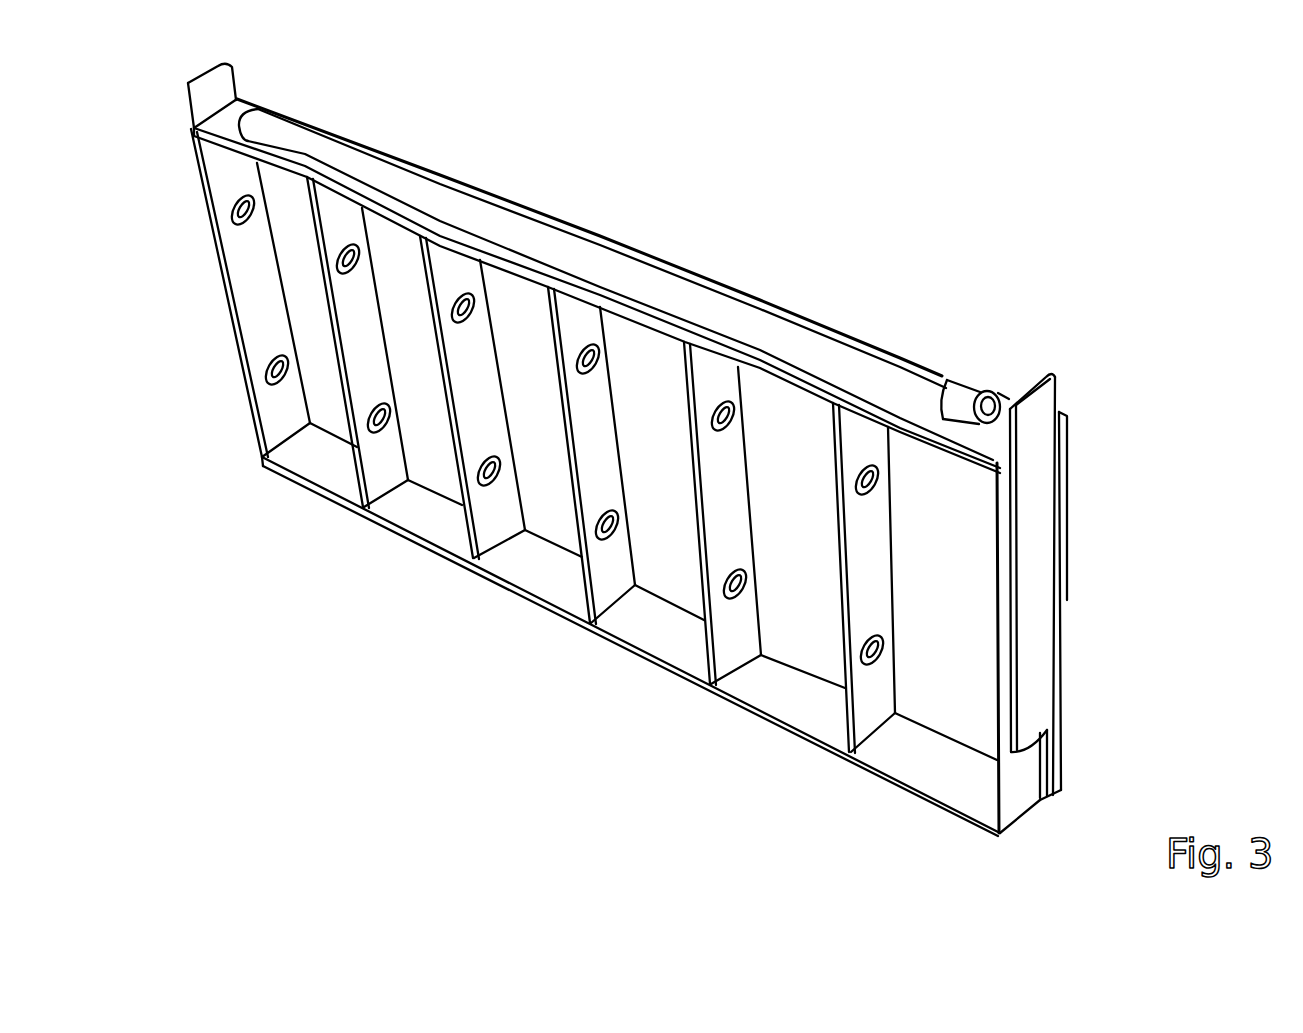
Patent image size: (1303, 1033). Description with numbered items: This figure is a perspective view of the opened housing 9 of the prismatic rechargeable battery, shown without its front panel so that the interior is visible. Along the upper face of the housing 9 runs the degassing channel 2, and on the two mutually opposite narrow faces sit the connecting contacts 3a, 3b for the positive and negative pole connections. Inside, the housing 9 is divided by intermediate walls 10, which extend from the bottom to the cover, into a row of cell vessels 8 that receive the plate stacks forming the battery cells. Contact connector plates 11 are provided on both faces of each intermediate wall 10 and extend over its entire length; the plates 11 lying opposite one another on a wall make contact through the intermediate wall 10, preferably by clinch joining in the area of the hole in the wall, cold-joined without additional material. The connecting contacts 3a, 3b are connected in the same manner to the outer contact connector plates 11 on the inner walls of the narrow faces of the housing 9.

The degassing channel 2 is at (746, 308).
The connecting contact 3a is at (190, 99).
The connecting contact 3b is at (1043, 400).
The cell vessel 8 is at (810, 634).
The housing 9 is at (1063, 531).
The intermediate wall 10 is at (710, 612).
The contact connector plate 11 is at (493, 540).